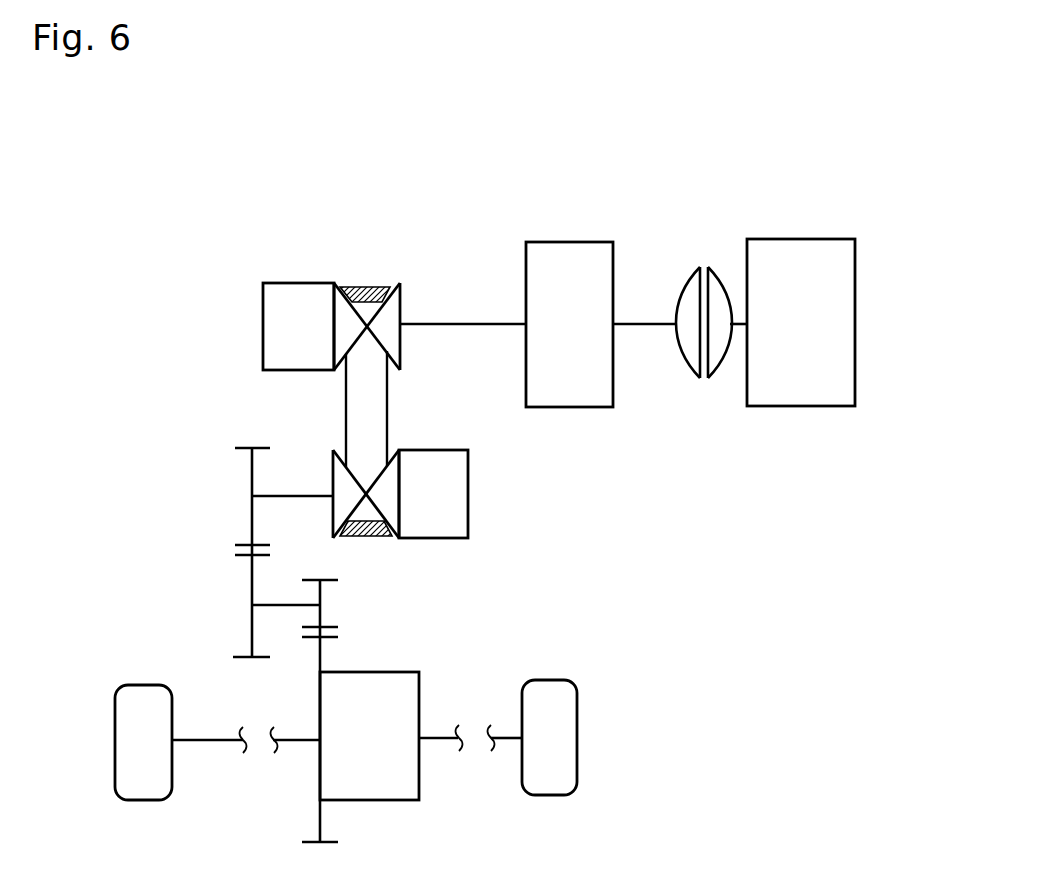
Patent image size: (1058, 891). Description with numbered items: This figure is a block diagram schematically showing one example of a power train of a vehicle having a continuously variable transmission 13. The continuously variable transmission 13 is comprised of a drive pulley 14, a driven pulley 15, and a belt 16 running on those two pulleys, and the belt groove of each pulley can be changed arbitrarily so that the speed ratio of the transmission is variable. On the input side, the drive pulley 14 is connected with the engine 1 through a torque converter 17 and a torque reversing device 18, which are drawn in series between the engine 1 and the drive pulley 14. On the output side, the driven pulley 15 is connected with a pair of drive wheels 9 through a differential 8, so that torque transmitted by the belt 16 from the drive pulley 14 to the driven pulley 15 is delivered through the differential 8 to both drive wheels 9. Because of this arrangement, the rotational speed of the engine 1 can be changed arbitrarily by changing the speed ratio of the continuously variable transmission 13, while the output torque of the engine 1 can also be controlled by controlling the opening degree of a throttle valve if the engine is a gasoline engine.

The engine 1 is at (855, 290).
The differential 8 is at (387, 672).
The drive wheels 9 is at (143, 800).
The continuously variable transmission 13 is at (298, 262).
The drive pulley 14 is at (402, 305).
The driven pulley 15 is at (392, 462).
The belt 16 is at (358, 403).
The torque converter 17 is at (708, 252).
The torque reversing device 18 is at (566, 242).